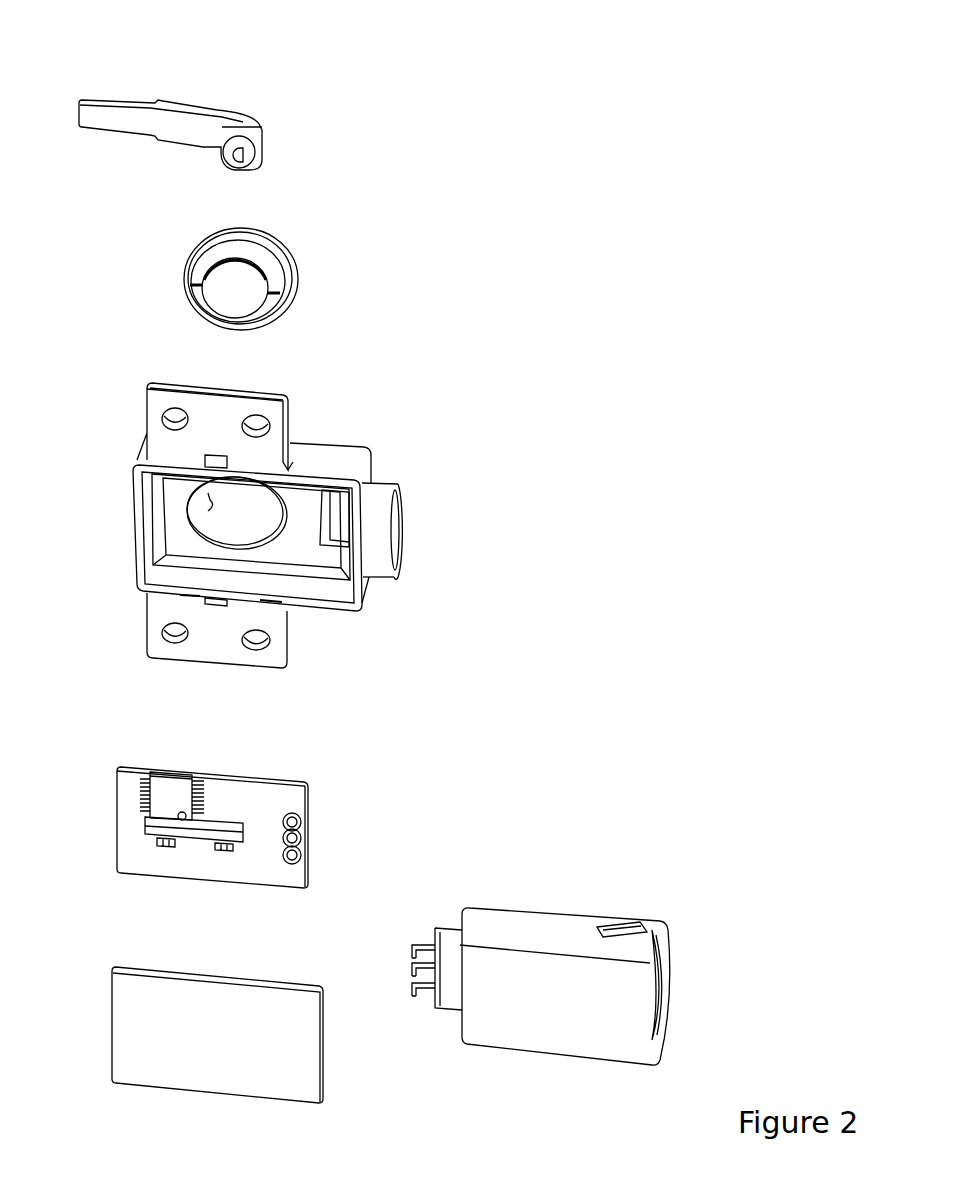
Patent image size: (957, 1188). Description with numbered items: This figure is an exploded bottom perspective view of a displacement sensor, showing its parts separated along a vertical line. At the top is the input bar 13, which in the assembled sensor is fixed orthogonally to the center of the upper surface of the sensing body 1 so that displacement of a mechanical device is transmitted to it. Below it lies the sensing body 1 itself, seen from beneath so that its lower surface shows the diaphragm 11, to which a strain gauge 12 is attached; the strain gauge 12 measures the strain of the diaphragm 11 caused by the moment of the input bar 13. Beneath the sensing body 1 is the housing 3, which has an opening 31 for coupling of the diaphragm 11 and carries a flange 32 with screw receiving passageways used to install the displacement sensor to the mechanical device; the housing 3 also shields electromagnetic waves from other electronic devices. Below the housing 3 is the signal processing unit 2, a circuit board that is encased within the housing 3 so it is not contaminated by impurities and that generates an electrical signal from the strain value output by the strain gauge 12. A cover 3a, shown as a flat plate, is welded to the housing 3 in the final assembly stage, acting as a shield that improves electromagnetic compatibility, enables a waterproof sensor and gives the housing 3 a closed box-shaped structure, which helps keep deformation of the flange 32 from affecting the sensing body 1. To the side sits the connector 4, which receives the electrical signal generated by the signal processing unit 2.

The sensing body 1 is at (289, 250).
The diaphragm 11 is at (258, 267).
The strain gauge 12 is at (190, 285).
The input bar 13 is at (190, 108).
The signal processing unit 2 is at (113, 816).
The housing 3 is at (347, 457).
The opening 31 is at (208, 500).
The flange 32 is at (282, 412).
The cover 3a is at (243, 1083).
The connector 4 is at (532, 923).